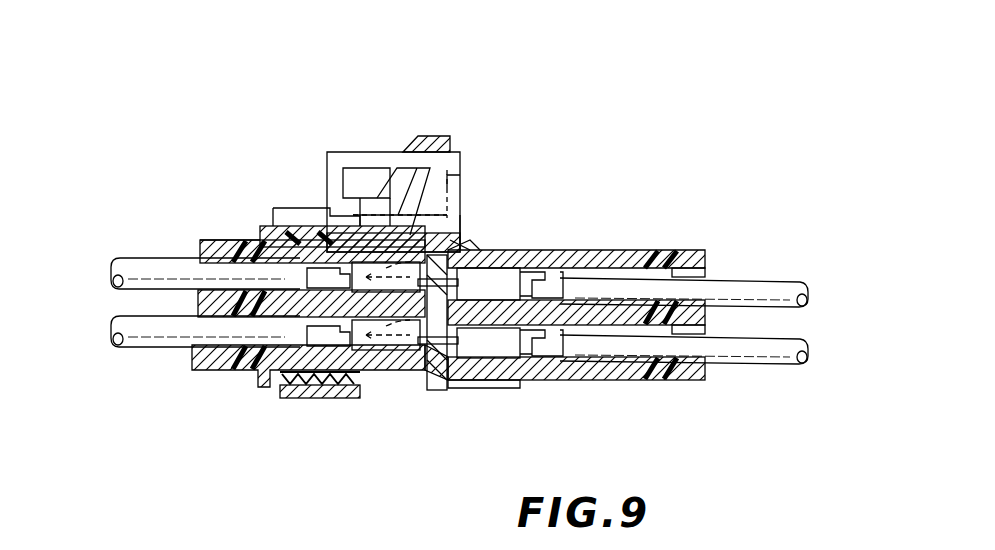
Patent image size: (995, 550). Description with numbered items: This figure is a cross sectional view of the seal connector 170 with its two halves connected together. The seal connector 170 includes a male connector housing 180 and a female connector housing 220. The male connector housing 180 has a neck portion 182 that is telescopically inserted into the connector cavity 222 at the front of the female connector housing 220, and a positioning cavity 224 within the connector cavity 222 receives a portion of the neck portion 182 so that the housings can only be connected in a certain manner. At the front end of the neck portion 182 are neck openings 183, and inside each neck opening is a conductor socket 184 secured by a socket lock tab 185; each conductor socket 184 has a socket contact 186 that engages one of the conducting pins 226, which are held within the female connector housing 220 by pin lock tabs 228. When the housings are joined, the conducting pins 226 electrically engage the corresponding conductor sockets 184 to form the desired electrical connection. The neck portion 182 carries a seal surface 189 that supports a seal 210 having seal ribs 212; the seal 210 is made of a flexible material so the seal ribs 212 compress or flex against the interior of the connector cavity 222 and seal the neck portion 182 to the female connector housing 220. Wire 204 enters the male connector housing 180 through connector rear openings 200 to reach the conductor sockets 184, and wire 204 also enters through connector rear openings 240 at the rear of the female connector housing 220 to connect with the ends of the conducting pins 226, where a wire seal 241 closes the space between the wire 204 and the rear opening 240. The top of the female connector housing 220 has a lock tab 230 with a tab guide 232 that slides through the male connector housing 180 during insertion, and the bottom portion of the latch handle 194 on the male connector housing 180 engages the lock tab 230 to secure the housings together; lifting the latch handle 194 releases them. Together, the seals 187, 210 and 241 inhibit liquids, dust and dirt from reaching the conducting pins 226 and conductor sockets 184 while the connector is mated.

The seal connector 170 is at (434, 95).
The male connector housing 180 is at (212, 218).
The neck portion 182 is at (462, 250).
The neck openings 183 is at (468, 250).
The conductor socket 184 is at (423, 337).
The socket lock tab 185 is at (400, 352).
The socket contact 186 is at (445, 375).
The seal 187 is at (248, 260).
The seal surface 189 is at (300, 228).
The latch handle 194 is at (440, 140).
The connector rear openings 200 is at (205, 255).
The wire 204 is at (147, 265).
The seal 210 is at (327, 230).
The seal ribs 212 is at (345, 232).
The female connector housing 220 is at (615, 232).
The connector cavity 222 is at (283, 398).
The positioning cavity 224 is at (537, 380).
The conducting pins 226 is at (480, 268).
The pin lock tabs 228 is at (540, 365).
The lock tab 230 is at (448, 180).
The tab guide 232 is at (375, 230).
The connector rear openings 240 is at (700, 272).
The wire seal 241 is at (655, 255).